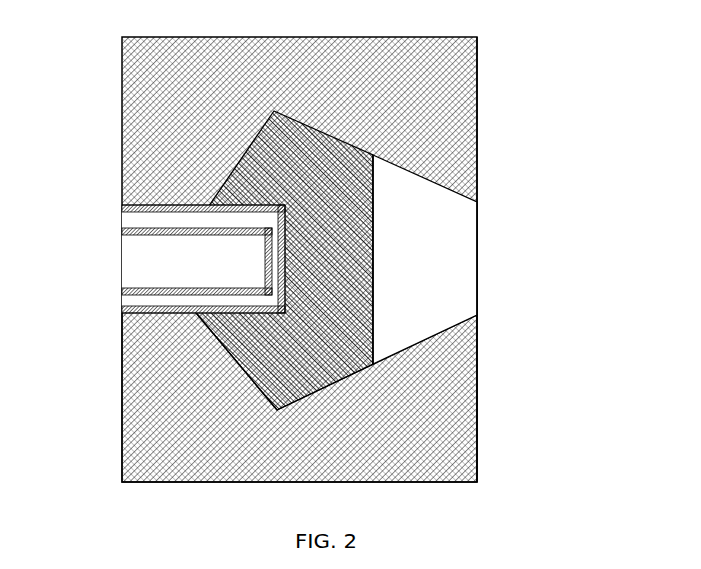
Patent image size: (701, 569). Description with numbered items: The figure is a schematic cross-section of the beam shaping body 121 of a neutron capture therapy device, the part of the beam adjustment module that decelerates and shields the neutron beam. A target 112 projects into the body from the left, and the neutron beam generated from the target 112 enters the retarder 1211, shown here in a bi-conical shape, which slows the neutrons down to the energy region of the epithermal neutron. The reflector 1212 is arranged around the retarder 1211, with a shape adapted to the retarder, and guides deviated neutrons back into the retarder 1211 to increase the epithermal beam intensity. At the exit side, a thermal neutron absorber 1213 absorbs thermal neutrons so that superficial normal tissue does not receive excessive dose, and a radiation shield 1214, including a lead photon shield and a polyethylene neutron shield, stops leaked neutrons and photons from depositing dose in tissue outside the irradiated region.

The target 112 is at (265, 257).
The beam shaping body 121 is at (227, 137).
The retarder 1211 is at (328, 200).
The reflector 1212 is at (375, 417).
The thermal neutron absorber 1213 is at (373, 303).
The radiation shield 1214 is at (478, 357).